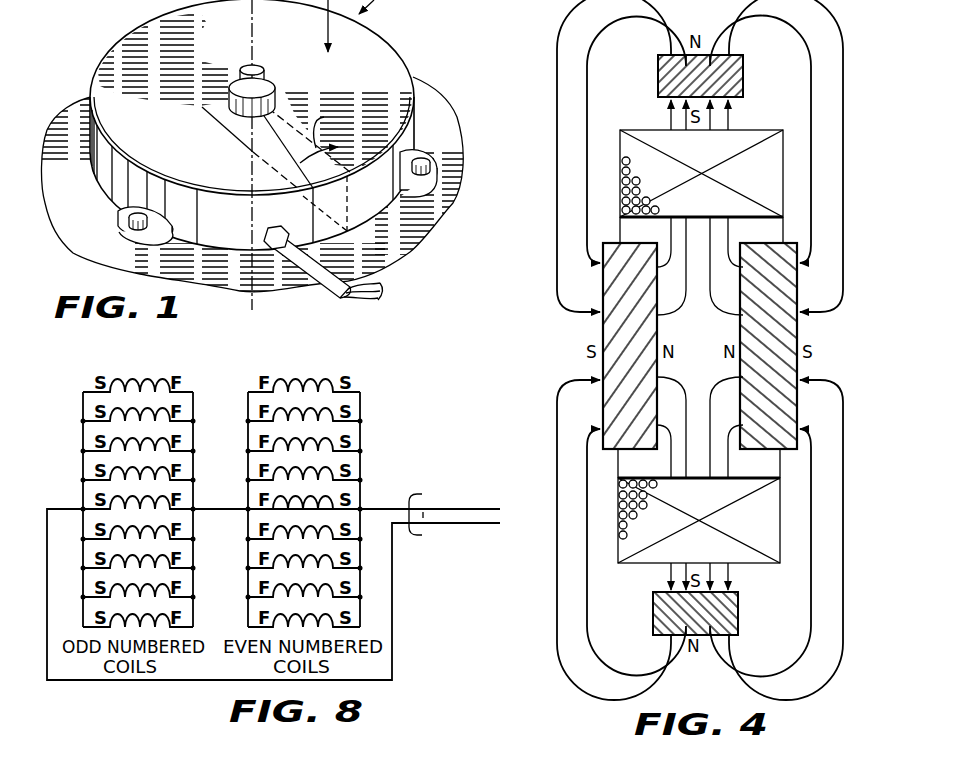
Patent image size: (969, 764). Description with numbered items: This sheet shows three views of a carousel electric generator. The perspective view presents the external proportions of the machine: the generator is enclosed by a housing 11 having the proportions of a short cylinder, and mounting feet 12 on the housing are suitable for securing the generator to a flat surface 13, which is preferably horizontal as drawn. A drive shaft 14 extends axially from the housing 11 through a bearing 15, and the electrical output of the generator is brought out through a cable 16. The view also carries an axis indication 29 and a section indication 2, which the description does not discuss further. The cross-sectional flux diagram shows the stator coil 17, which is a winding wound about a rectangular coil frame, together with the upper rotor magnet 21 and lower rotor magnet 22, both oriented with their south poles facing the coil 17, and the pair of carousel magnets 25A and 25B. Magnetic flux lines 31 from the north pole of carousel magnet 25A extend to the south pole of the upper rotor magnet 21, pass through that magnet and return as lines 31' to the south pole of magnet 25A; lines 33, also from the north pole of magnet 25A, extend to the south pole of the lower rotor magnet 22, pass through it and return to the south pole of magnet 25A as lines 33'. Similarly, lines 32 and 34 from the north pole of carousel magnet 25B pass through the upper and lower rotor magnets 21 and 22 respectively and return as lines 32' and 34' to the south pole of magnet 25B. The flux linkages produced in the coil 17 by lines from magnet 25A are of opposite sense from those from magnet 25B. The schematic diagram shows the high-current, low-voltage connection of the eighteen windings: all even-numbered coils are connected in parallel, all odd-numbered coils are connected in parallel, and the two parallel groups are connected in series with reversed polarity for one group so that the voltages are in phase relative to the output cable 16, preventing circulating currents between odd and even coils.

In FIG. 1, the housing 11 is at (168, 141).
In FIG. 1, the mounting feet 12 is at (118, 214).
In FIG. 1, the flat surface 13 is at (257, 187).
In FIG. 1, the drive shaft 14 is at (264, 72).
In FIG. 1, the bearing 15 is at (239, 73).
In FIG. 1, the cable 16 is at (322, 291).
In FIG. 8, the cable 16 is at (438, 523).
In FIG. 1, the axis of rotation 29 is at (253, 33).
In FIG. 1, the section line 2- 2 is at (242, 119).
In FIG. 4, the coil 17 is at (770, 160).
In FIG. 4, the upper rotor magnet 21 is at (733, 77).
In FIG. 4, the lower rotor magnet 22 is at (722, 612).
In FIG. 4, the carousel magnet 25A is at (618, 322).
In FIG. 4, the carousel magnet 25B is at (780, 325).
In FIG. 4, the magnetic flux lines 31 is at (658, 207).
In FIG. 4, the magnetic flux lines 32 is at (740, 207).
In FIG. 4, the magnetic flux lines 33 is at (656, 483).
In FIG. 4, the magnetic flux lines 34 is at (739, 483).
In FIG. 4, the return flux lines 31' is at (604, 156).
In FIG. 4, the return flux lines 32' is at (803, 156).
In FIG. 4, the return flux lines 33' is at (600, 540).
In FIG. 4, the return flux lines 34' is at (797, 540).